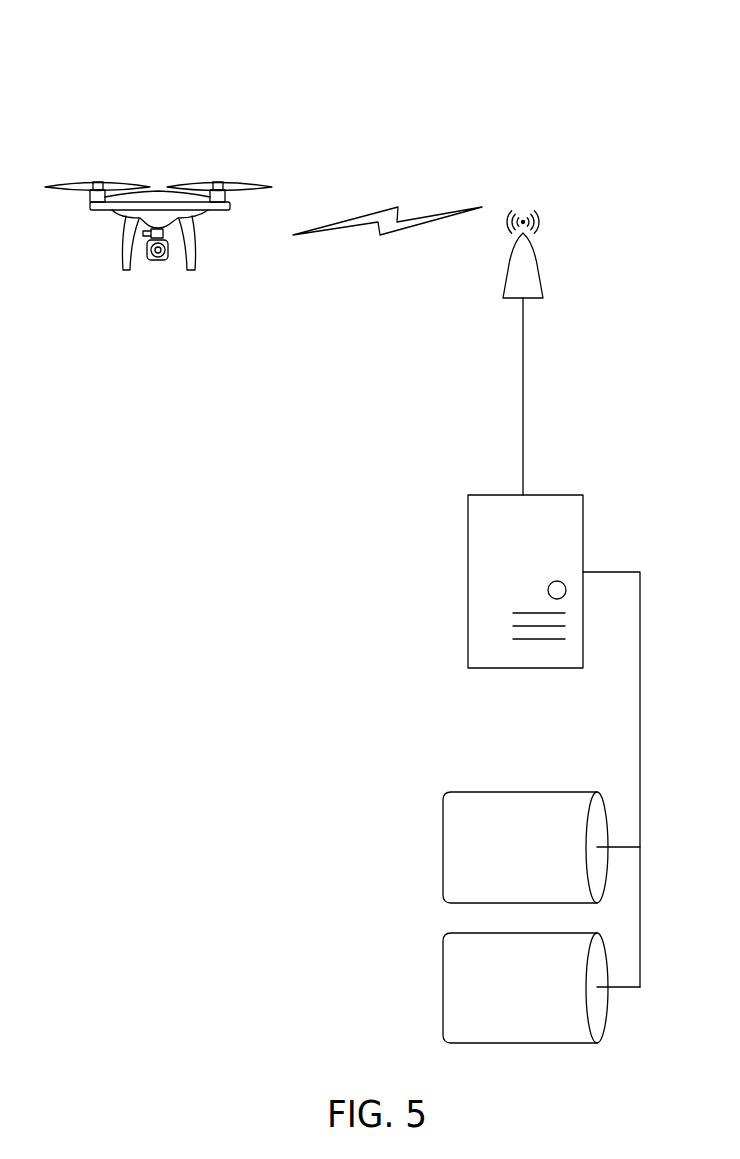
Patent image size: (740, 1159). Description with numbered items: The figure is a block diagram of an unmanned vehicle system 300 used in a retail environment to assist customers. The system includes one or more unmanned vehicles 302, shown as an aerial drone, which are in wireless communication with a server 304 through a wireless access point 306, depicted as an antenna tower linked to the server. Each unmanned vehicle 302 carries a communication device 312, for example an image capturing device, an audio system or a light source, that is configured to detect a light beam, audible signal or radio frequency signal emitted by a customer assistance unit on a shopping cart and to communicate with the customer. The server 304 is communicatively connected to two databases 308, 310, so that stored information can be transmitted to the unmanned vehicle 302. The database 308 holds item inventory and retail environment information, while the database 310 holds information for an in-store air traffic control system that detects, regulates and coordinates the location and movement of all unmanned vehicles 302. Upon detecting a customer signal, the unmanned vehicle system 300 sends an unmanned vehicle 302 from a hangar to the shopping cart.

The unmanned vehicle system 300 is at (588, 68).
The unmanned vehicle 302 is at (190, 160).
The server 304 is at (583, 535).
The wireless access point 306 is at (540, 268).
The database 308 is at (443, 860).
The database 310 is at (443, 995).
The communication device 312 is at (155, 260).